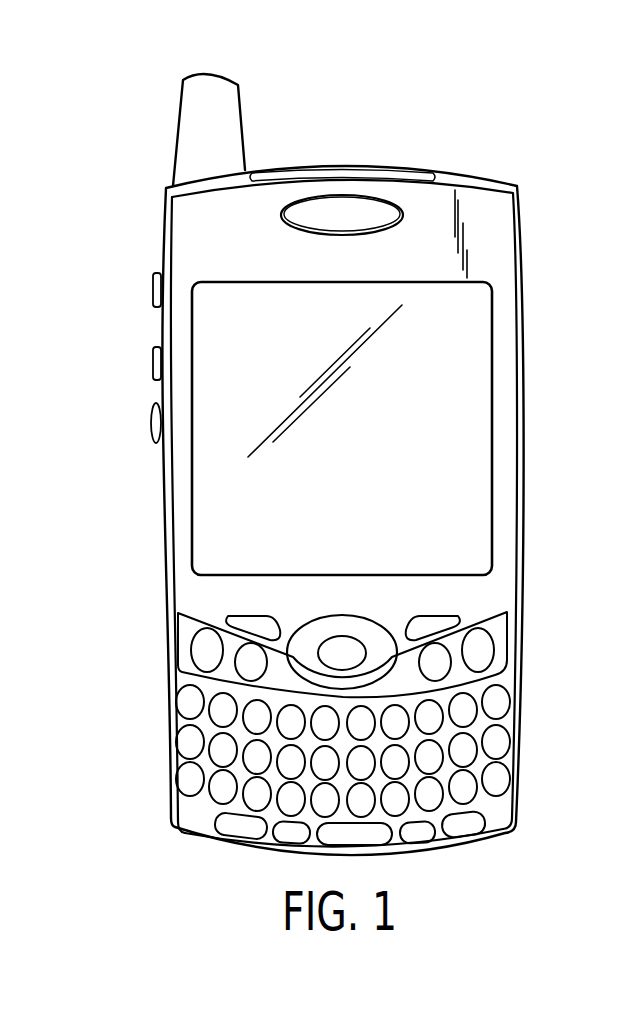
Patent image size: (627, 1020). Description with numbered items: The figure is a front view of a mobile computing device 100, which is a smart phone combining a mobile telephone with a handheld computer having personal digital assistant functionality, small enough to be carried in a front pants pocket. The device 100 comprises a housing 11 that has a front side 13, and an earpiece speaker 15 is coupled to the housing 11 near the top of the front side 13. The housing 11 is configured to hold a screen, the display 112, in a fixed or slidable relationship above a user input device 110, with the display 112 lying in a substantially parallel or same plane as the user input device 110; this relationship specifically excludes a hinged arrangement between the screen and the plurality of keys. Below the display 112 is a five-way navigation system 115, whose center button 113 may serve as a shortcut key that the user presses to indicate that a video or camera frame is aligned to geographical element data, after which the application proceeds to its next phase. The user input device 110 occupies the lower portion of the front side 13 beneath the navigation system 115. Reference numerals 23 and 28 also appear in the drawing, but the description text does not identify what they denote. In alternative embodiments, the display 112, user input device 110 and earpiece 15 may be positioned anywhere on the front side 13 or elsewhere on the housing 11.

The mobile computing device 100 is at (341, 476).
The housing 11 is at (488, 218).
The front side 13 is at (232, 249).
The earpiece speaker 15 is at (342, 210).
The bottom end 23 is at (505, 835).
The antenna 28 is at (245, 132).
The user input device 110 is at (497, 742).
The display 112 is at (472, 383).
The center button 113 is at (343, 652).
The 5-way navigation system 115 is at (294, 599).